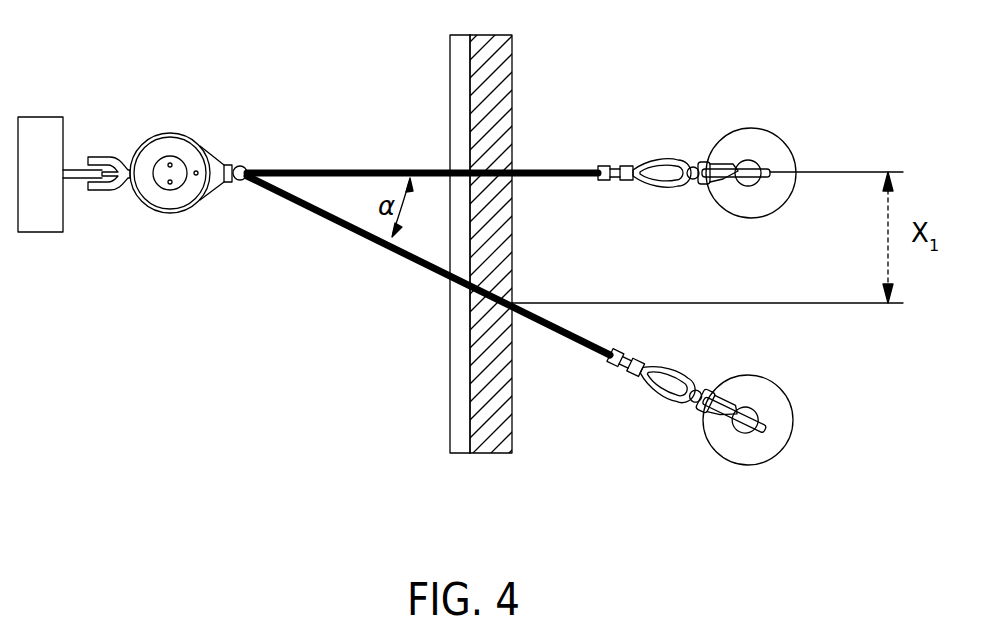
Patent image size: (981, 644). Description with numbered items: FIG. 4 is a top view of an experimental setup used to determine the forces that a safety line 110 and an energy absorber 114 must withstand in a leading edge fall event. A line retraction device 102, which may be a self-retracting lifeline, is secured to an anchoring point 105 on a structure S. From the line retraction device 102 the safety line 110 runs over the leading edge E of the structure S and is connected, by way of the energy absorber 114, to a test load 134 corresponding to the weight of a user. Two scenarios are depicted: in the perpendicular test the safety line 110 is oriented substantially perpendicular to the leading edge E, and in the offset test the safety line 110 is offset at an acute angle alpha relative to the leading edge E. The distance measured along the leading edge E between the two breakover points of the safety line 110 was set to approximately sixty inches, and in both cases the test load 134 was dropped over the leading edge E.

The anchoring point 105 is at (48, 117).
The line retraction device 102 is at (184, 137).
The safety line 110 is at (345, 168).
The energy absorber 114 is at (748, 160).
The test load 134 is at (788, 136).
The structure S is at (450, 60).
The leading edge E is at (512, 87).